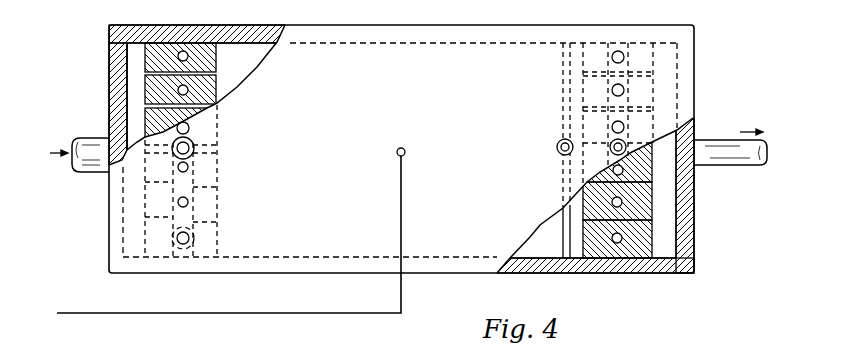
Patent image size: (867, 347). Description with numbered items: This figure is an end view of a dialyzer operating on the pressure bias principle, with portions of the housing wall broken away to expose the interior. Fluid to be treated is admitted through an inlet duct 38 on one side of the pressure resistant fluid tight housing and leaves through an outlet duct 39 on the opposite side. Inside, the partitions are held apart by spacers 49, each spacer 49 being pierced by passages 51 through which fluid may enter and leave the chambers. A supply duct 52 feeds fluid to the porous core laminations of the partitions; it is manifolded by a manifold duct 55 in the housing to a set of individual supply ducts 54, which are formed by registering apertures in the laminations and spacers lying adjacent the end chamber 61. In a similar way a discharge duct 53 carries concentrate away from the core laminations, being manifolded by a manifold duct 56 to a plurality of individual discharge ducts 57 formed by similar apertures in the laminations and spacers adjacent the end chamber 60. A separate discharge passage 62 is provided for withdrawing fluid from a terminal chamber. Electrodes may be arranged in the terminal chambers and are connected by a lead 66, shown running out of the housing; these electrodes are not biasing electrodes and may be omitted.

The inlet duct 38 is at (90, 162).
The outlet duct 39 is at (727, 157).
The spacer 49 is at (145, 87).
The passage 51 is at (218, 78).
The supply duct 52 is at (628, 143).
The discharge duct 53 is at (195, 144).
The individual supply duct 54 is at (620, 52).
The manifold duct 55 is at (628, 61).
The manifold duct 56 is at (173, 227).
The individual discharge duct 57 is at (188, 90).
The end chamber 60 is at (133, 125).
The end chamber 61 is at (668, 89).
The discharge passage 62 is at (557, 149).
The lead 66 is at (298, 313).